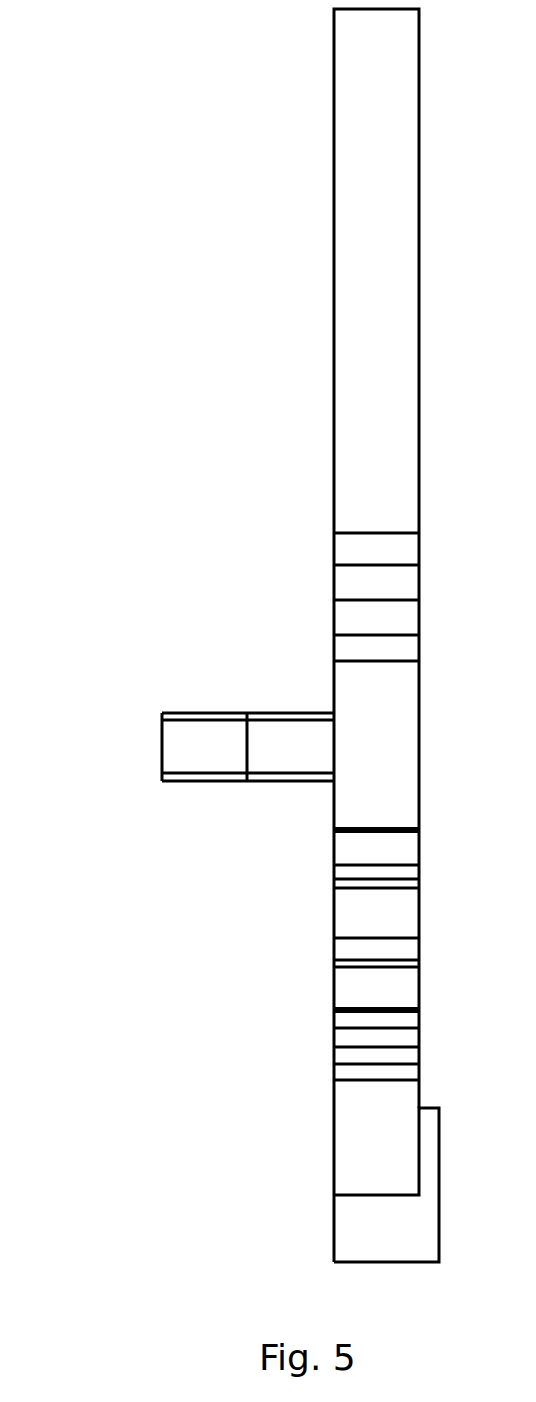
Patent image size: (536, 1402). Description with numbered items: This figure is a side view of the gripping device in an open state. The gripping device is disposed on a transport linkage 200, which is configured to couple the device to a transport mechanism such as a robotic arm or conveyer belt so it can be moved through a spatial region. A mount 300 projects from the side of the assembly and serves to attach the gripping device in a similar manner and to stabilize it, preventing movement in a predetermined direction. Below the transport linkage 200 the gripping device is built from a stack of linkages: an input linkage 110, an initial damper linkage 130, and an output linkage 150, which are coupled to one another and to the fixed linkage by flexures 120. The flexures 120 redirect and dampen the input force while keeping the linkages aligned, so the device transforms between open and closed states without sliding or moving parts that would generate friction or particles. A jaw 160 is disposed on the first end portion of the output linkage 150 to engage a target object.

The transport linkage 200 is at (334, 428).
The mount 300 is at (162, 758).
The input linkage 110 is at (334, 808).
The initial damper linkage 130 is at (334, 905).
The flexures 120 is at (334, 985).
The output linkage 150 is at (334, 1047).
The jaw 160 is at (334, 1222).